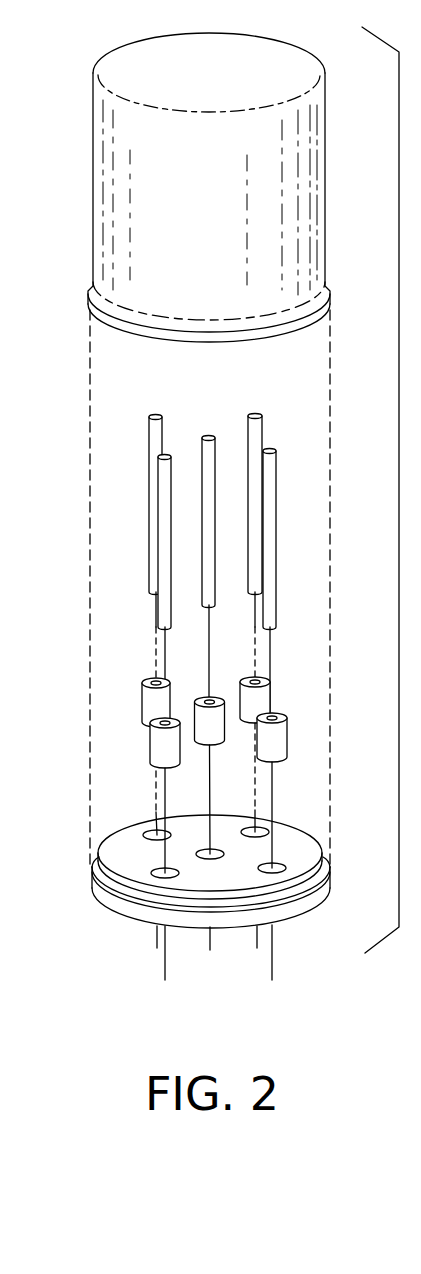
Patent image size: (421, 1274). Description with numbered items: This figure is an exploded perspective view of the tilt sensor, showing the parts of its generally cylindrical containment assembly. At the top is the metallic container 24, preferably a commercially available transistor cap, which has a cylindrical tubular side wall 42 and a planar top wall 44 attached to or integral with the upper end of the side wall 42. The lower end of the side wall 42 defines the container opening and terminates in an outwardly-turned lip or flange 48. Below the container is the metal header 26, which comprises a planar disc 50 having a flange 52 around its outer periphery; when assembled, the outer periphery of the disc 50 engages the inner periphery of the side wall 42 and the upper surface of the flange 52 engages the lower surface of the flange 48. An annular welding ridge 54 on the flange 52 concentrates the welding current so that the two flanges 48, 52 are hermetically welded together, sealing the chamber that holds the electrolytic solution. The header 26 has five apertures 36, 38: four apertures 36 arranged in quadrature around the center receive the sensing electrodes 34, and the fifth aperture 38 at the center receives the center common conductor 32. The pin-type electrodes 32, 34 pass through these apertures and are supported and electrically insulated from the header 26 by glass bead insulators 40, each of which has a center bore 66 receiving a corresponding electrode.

The metallic container 24 is at (212, 182).
The header 26 is at (193, 661).
The center common conductor 32 is at (208, 459).
The sensing electrodes 34 is at (162, 478).
The apertures 36 is at (162, 872).
The fifth aperture 38 is at (198, 853).
The insulators 40 is at (211, 759).
The side wall 42 is at (178, 203).
The top wall 44 is at (193, 74).
The flange 48 is at (297, 327).
The planar disc 50 is at (247, 897).
The flange 52 is at (288, 912).
The annular welding ridge 54 is at (107, 898).
The center bore 66 is at (167, 720).